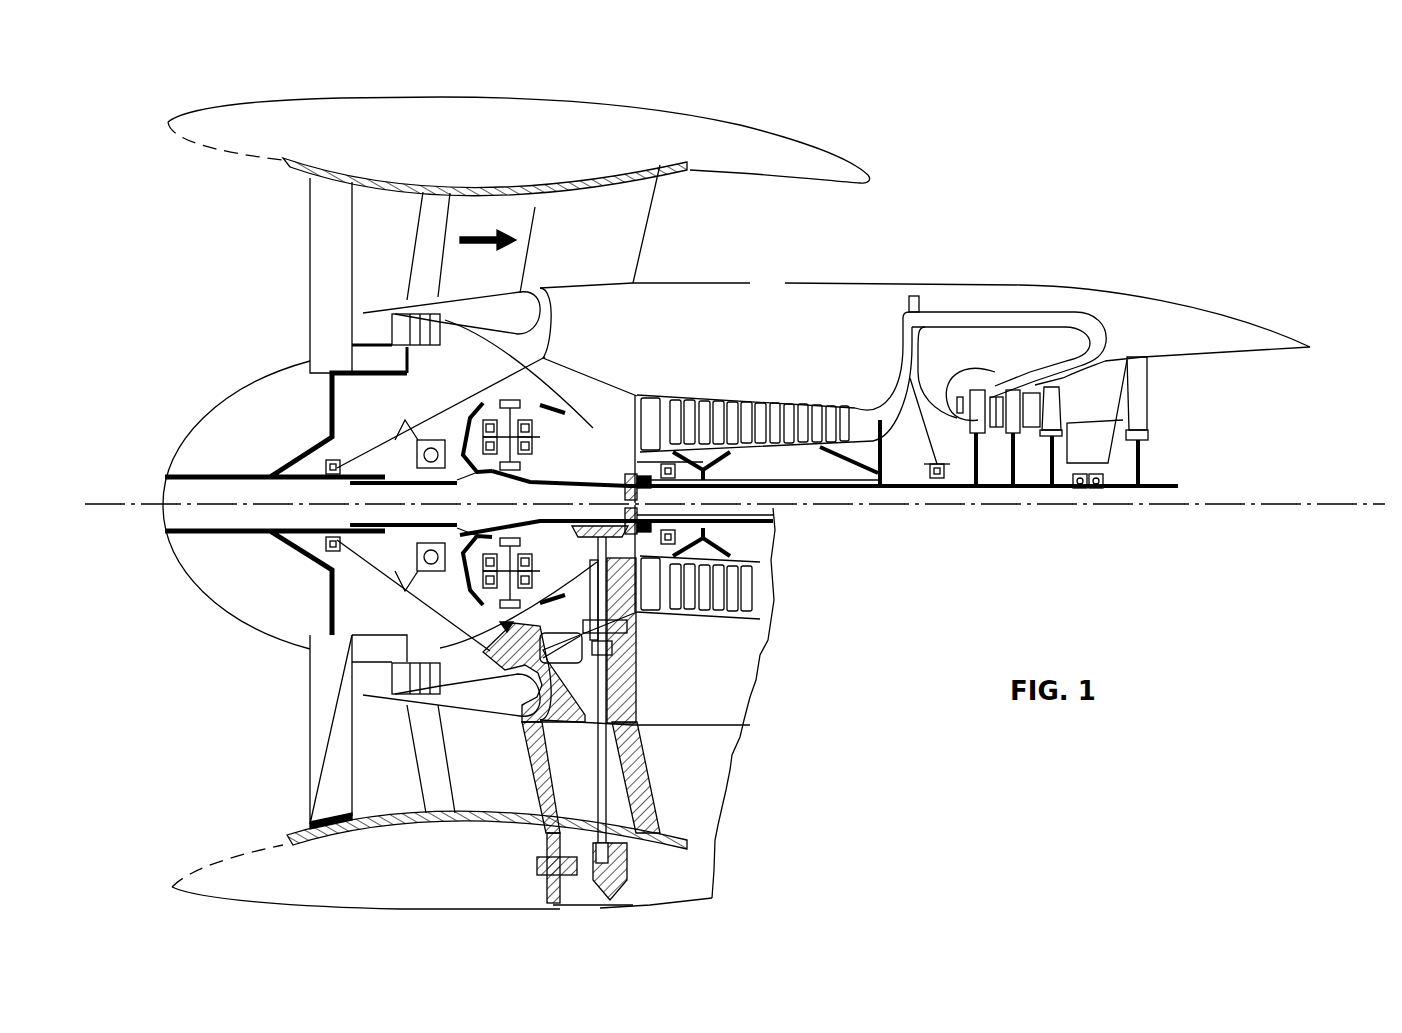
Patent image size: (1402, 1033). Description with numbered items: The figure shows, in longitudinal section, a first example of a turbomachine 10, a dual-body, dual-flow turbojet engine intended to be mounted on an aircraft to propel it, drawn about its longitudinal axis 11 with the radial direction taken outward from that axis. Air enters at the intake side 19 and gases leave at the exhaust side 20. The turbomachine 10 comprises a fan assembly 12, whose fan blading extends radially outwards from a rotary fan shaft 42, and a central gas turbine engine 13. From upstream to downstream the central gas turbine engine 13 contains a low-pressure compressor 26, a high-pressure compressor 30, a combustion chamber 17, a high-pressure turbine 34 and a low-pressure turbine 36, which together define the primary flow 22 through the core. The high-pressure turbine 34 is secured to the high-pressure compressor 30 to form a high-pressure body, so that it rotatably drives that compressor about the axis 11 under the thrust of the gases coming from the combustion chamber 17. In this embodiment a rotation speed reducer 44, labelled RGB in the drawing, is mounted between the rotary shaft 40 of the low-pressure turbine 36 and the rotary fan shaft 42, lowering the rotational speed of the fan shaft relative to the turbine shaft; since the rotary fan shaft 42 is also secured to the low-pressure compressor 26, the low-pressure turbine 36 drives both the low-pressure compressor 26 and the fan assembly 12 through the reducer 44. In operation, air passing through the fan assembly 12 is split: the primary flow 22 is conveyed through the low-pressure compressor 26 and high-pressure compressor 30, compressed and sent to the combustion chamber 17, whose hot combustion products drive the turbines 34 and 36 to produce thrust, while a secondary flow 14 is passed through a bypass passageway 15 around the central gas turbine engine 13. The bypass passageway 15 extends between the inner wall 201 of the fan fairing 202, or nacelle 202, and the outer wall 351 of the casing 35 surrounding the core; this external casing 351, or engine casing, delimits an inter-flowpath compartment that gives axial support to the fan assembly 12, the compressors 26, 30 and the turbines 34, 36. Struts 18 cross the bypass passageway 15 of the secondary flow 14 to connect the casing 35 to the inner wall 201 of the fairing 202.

The turbomachine 10 is at (924, 120).
The longitudinal axis 11 is at (1320, 503).
The fan assembly 12 is at (318, 276).
The central gas turbine engine 13 is at (840, 581).
The secondary flow 14 is at (488, 232).
The bypass passageway 15 is at (368, 262).
The combustion chamber 17 is at (888, 407).
The struts 18 is at (578, 242).
The inlet 19 is at (206, 276).
The exhaust side 20 is at (816, 242).
The primary flow 22 is at (568, 417).
The low-pressure compressor 26 is at (405, 331).
The high-pressure compressor 30 is at (705, 412).
The high-pressure turbine 34 is at (1017, 390).
The casing 35 is at (778, 350).
The low-pressure turbine 36 is at (1138, 396).
The rotary shaft of the low-pressure turbine 40 is at (530, 477).
The rotary fan shaft 42 is at (228, 475).
The rotation speed reducer 44 is at (486, 473).
The inner wall of the fan fairing 201 is at (444, 190).
The fan fairing 202 is at (477, 150).
The external casing 351 is at (705, 283).
The reduction gearbox RGB is at (489, 528).